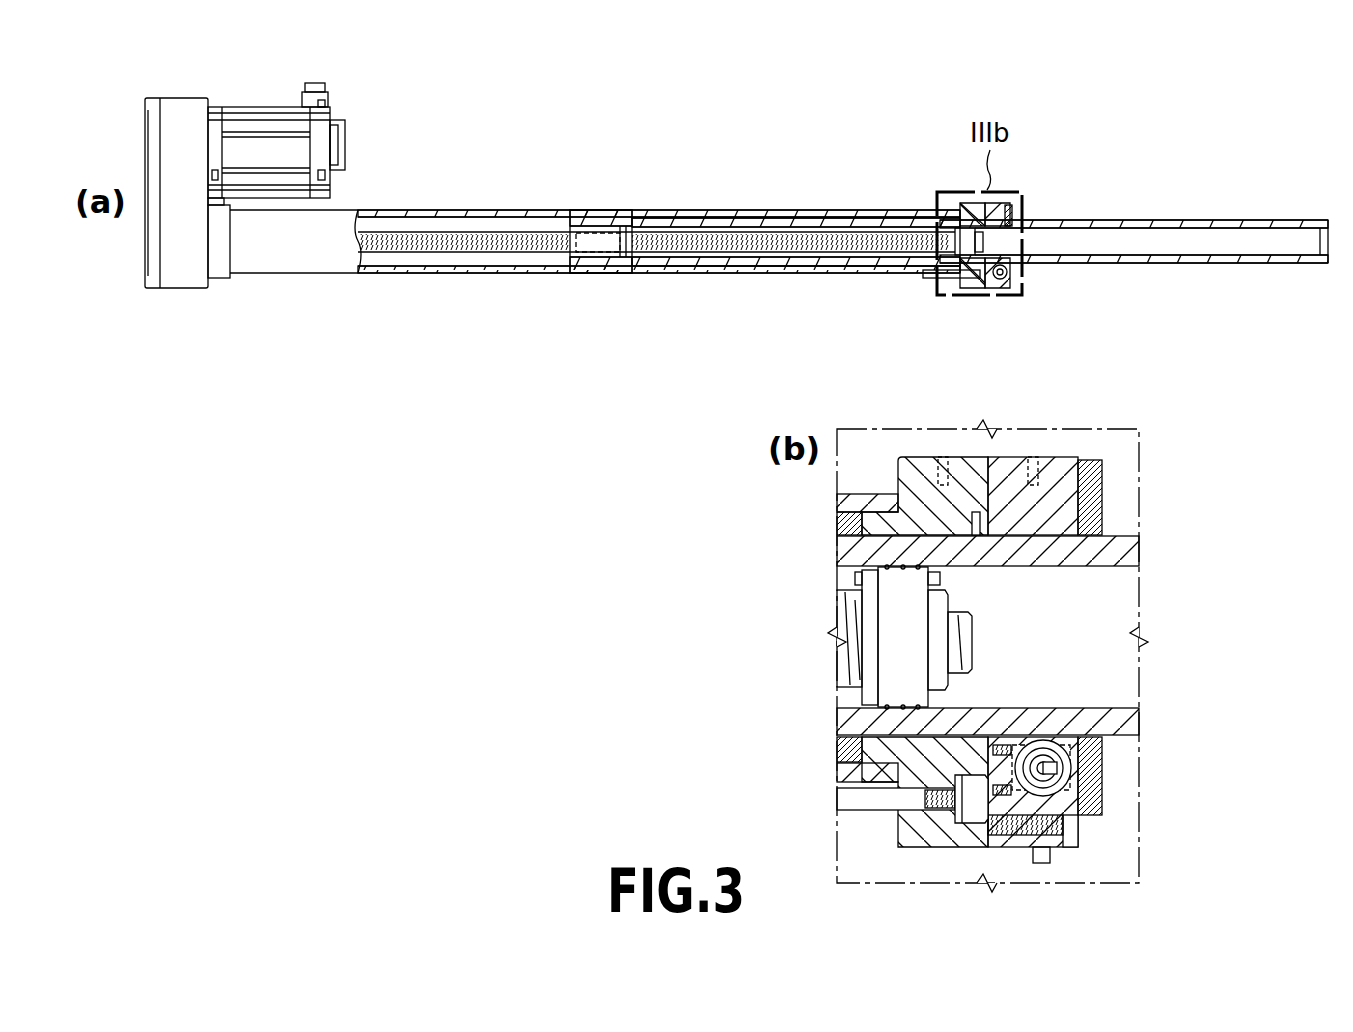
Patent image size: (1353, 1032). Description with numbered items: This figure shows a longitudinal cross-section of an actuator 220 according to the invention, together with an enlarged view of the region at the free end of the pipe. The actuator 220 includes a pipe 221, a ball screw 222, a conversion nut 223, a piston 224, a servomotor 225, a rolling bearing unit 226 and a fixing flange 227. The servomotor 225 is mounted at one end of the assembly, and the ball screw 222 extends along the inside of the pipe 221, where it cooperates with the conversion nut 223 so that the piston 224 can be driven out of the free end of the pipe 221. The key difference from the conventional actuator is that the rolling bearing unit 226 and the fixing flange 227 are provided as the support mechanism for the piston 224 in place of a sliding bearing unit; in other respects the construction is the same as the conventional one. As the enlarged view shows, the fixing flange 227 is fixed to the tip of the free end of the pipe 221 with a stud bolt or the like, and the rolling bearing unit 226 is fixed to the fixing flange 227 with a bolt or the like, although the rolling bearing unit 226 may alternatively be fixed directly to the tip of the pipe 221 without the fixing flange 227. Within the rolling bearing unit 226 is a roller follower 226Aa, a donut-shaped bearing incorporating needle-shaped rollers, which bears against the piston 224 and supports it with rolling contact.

The actuator 220 is at (1177, 107).
The pipe 221 is at (409, 268).
The ball screw 222 is at (492, 252).
The conversion nut 223 is at (598, 265).
The piston 224 is at (1210, 220).
The servomotor 225 is at (263, 106).
The rolling bearing unit 226 is at (1062, 465).
The fixing flange 227 is at (917, 465).
The roller follower 226Aa is at (1068, 758).